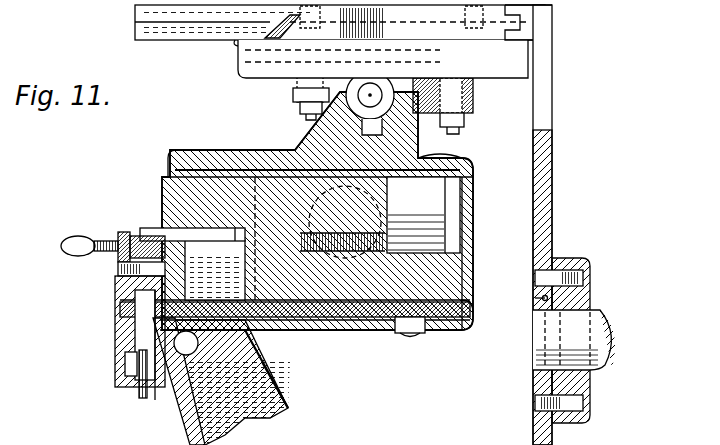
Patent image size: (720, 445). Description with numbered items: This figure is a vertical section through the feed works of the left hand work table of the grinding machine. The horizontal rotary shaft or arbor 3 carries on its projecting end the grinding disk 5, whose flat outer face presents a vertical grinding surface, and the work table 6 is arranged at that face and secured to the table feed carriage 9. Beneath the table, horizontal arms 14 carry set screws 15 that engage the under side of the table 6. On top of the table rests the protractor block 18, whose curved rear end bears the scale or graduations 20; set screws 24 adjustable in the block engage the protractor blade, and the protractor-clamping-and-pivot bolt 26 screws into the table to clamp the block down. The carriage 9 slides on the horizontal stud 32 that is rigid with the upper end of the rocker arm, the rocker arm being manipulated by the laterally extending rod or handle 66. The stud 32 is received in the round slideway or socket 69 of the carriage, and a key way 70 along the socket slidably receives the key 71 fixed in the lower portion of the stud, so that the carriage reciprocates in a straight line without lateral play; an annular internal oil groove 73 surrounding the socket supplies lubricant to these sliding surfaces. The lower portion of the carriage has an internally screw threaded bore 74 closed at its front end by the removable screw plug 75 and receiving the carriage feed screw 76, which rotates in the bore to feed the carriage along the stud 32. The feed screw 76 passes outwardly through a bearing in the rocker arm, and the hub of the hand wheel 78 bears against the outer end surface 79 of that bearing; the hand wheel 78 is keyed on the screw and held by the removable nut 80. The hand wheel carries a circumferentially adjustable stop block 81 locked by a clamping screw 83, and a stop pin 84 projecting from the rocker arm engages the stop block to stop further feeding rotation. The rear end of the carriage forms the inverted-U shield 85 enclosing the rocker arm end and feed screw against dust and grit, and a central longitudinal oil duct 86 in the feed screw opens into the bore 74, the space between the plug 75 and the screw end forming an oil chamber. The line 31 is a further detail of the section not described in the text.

The rotary shaft or arbor 3 is at (600, 340).
The grinding disk 5 is at (548, 170).
The work table 6 is at (238, 48).
The table feed carriage 9 is at (474, 213).
The arms 14 is at (292, 92).
The set screws 15 is at (303, 112).
The protractor block 18 is at (395, 12).
The scale or graduations 20 is at (232, 42).
The set screws 24 is at (282, 25).
The protractor-clamping-and-pivot bolt 26 is at (425, 22).
The bracket edge 31 is at (285, 392).
The stud 32 is at (317, 211).
The rod or handle 66 is at (195, 358).
The slideway or socket 69 is at (450, 162).
The key way 70 is at (402, 255).
The key 71 is at (392, 212).
The annular internal oil groove 73 is at (300, 140).
The internally screw threaded bore 74 is at (345, 322).
The screw plug 75 is at (470, 318).
The carriage feed screw 76 is at (405, 332).
The hand wheel 78 is at (125, 338).
The outer end surface 79 is at (158, 380).
The nut 80 is at (120, 280).
The stop block 81 is at (125, 368).
The clamping screw 83 is at (141, 398).
The stop pin 84 is at (150, 228).
The shield 85 is at (206, 160).
The oil duct 86 is at (298, 328).